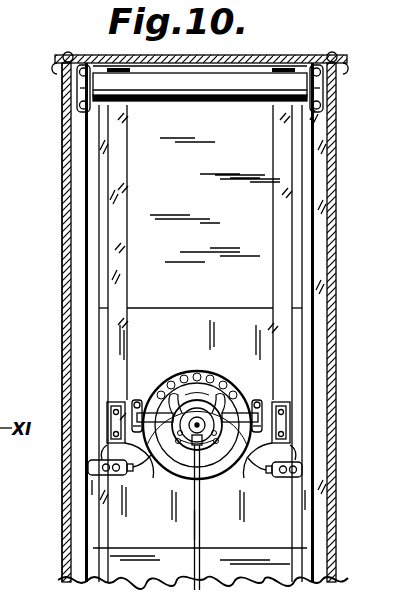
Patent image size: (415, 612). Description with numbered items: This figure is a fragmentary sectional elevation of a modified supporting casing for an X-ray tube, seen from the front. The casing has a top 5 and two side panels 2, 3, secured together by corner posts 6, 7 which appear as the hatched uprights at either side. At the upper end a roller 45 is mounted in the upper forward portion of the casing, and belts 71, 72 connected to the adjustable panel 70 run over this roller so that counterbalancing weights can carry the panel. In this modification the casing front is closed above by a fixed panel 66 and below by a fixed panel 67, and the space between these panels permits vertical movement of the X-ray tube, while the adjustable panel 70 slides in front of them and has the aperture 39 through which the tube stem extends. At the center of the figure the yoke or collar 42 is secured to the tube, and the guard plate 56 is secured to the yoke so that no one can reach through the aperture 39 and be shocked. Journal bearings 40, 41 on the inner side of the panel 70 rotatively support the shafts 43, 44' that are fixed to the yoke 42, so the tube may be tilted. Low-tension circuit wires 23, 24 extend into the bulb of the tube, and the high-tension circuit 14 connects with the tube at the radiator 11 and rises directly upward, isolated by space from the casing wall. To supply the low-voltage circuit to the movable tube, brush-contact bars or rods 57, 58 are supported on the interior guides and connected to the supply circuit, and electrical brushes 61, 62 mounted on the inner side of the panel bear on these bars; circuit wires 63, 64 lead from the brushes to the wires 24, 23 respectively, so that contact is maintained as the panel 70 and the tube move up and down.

The top 5 is at (208, 60).
The roller 45 is at (227, 80).
The corner post 7 is at (72, 217).
The corner post 6 is at (313, 224).
The side panel 3 is at (62, 250).
The belt 71 is at (115, 188).
The belt 72 is at (285, 291).
The fixed panel 66 is at (147, 277).
The side panel 2 is at (292, 271).
The adjustable panel 70 is at (105, 530).
The fixed panel 67 is at (242, 578).
The aperture 39 is at (186, 375).
The yoke or collar 42 is at (188, 446).
The guard plate 56 is at (236, 442).
The radiator 11 is at (206, 448).
The high-tension electrical circuit 14 is at (199, 526).
The low-tension circuit wire 23 is at (170, 405).
The low-tension circuit wire 24 is at (232, 405).
The journal bearing 40 is at (132, 410).
The journal bearing 41 is at (262, 410).
The shaft 43 is at (107, 448).
The shaft 44' is at (307, 440).
The electrical brush 61 is at (104, 476).
The electrical brush 62 is at (302, 471).
The circuit wire 63 is at (134, 470).
The circuit wire 64 is at (270, 480).
The brush-contact bar or rod 57 is at (92, 488).
The brush-contact bar or rod 58 is at (303, 501).